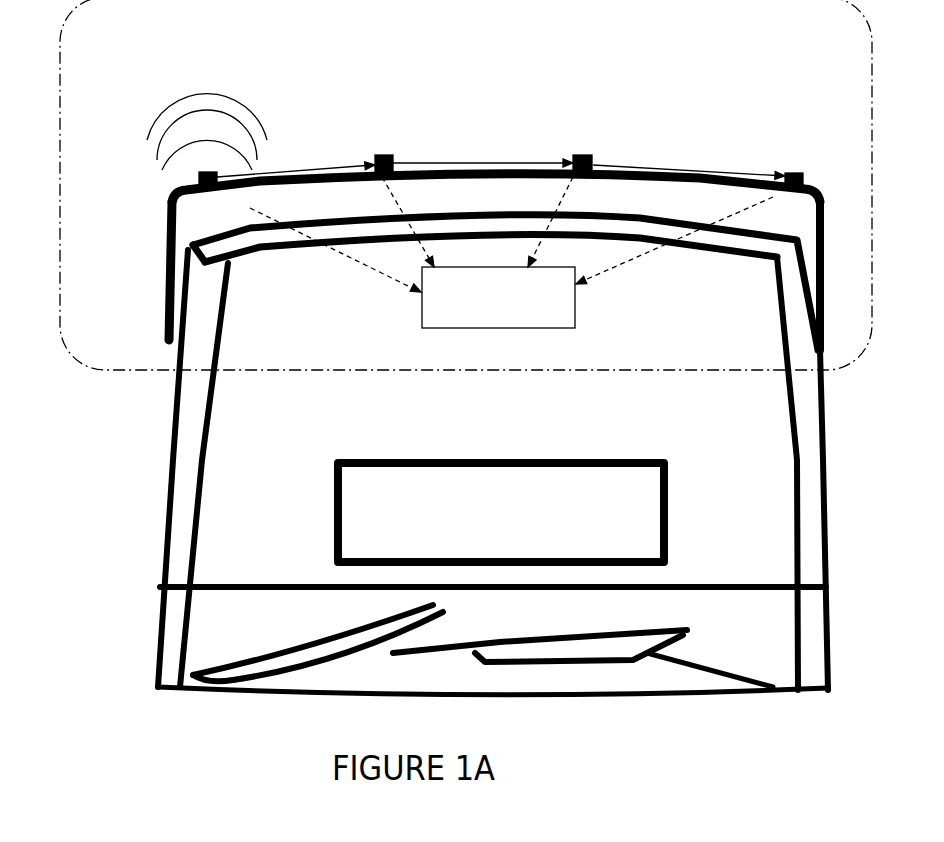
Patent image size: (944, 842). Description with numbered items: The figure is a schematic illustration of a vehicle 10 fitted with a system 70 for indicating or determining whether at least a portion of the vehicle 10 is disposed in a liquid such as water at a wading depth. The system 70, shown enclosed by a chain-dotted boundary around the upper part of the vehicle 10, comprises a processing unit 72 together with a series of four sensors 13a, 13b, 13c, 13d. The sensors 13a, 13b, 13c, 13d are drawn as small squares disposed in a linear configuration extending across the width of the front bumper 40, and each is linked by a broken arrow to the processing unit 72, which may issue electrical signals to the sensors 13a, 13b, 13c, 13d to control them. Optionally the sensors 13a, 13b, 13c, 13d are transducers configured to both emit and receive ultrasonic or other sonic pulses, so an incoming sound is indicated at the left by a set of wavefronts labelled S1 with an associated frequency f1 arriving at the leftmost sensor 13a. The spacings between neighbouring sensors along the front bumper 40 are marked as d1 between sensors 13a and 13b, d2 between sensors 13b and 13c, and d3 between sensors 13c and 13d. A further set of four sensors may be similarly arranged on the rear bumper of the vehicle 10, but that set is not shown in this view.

The vehicle 10 is at (501, 368).
The sensor 13a is at (220, 184).
The sensor 13b is at (393, 165).
The sensor 13c is at (585, 175).
The sensor 13d is at (787, 192).
The front bumper 40 is at (452, 208).
The system 70 is at (375, 370).
The processing unit 72 is at (499, 308).
The sound source S1 is at (145, 99).
The sound frequency f1 is at (184, 75).
The sensor spacing distance d1 is at (296, 157).
The sensor spacing distance d2 is at (483, 145).
The sensor spacing distance d3 is at (689, 158).